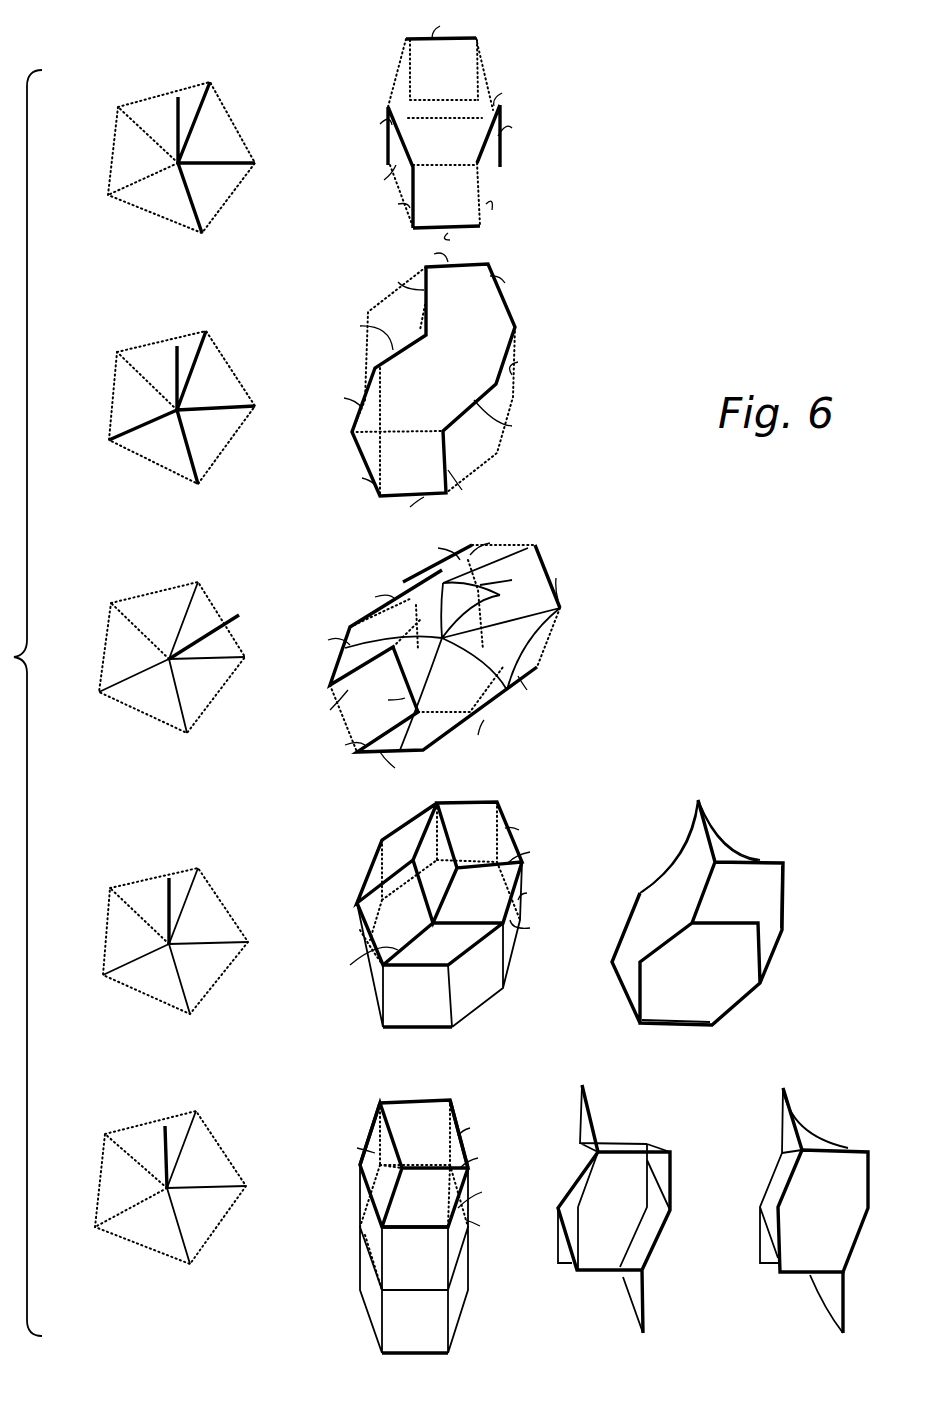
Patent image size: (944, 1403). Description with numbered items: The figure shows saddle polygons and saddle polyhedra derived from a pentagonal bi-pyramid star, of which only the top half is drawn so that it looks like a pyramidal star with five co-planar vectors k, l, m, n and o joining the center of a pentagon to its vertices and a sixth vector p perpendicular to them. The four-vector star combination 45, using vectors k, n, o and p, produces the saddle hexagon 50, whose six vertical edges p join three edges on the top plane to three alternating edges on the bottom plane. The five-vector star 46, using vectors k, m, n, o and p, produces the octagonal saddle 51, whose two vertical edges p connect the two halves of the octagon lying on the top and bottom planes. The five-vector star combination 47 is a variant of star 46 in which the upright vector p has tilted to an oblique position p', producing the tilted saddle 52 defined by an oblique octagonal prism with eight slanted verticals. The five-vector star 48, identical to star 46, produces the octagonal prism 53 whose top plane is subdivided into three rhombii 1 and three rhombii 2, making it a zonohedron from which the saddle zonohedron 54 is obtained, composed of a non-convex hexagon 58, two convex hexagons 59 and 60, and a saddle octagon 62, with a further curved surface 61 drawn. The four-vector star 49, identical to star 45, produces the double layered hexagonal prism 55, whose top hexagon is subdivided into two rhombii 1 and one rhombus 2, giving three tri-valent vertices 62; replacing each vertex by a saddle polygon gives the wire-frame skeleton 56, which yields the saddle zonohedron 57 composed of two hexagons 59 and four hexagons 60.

The rhombus 1 is at (436, 1016).
The rhombus 2 is at (330, 993).
The 4-star combination 45 is at (74, 203).
The 5-star 46 is at (76, 437).
The 5-star combination 47 is at (74, 697).
The 5-star 48 is at (72, 975).
The 4-star 49 is at (76, 1232).
The saddle hexagon 50 is at (346, 170).
The octagonal saddle 51 is at (336, 472).
The tilted saddle 52 is at (326, 742).
The octagonal prism 53 is at (427, 1004).
The saddle zonohedron 54 is at (696, 927).
The double layered hexagonal prism 55 is at (393, 1220).
The wire-frame skeleton 56 is at (562, 1286).
The saddle zonohedron 57 is at (750, 1284).
The non-convex hexagon 58 is at (770, 918).
The convex hexagon 59 is at (725, 995).
The convex hexagon 60 is at (722, 858).
The curved upper surface 61 is at (660, 898).
The tri-valent vertex 62 is at (450, 1100).